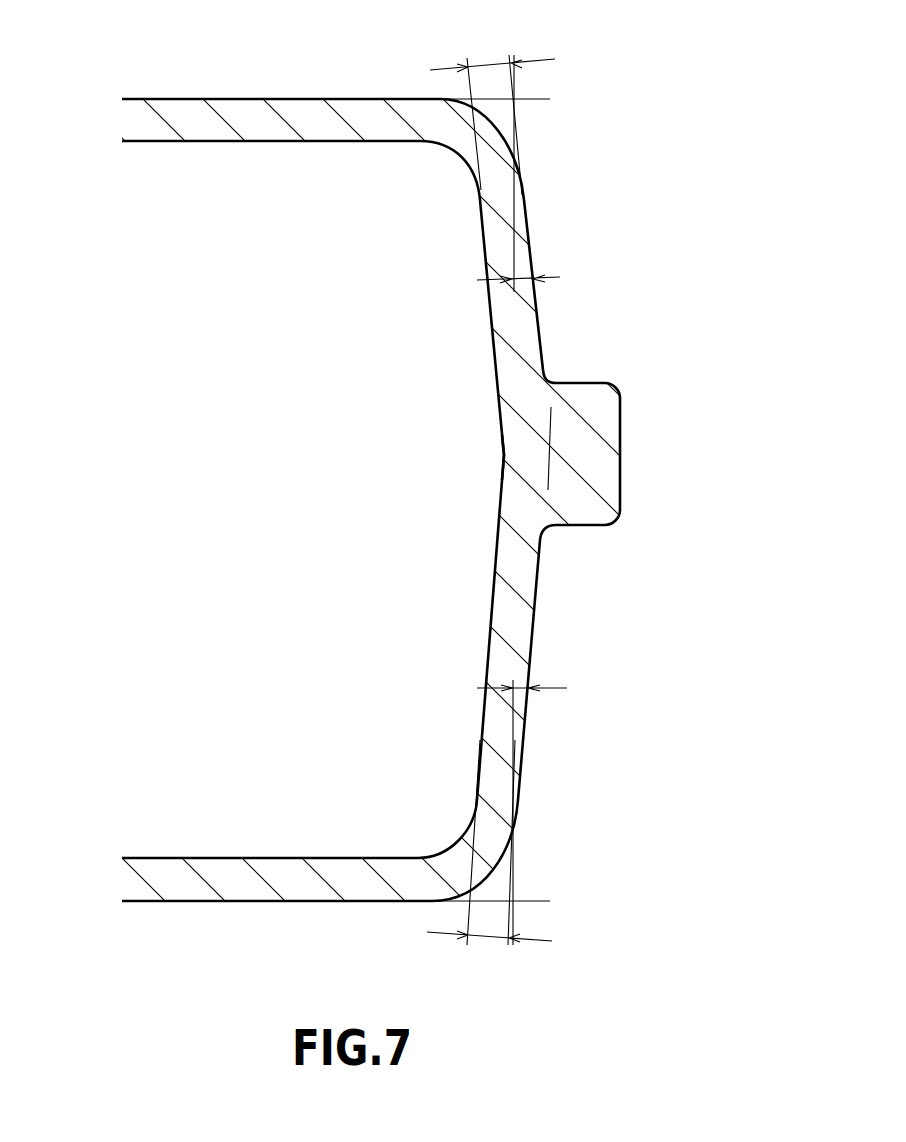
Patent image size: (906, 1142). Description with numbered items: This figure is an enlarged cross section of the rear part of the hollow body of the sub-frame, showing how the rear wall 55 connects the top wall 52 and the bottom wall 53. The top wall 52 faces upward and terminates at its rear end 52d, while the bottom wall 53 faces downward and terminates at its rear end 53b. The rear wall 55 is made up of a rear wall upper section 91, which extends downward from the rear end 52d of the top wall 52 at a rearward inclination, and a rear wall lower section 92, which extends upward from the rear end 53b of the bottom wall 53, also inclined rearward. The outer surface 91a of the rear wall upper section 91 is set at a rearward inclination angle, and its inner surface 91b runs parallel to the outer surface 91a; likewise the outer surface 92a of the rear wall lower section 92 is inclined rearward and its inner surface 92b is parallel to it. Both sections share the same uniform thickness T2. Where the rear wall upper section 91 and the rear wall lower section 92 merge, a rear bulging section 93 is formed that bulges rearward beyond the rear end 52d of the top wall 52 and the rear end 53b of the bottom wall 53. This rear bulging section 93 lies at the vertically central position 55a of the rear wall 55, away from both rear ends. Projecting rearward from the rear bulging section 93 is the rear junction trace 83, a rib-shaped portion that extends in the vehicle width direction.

The top wall 52 is at (258, 99).
The rear end of top wall 52d is at (413, 107).
The bottom wall 53 is at (258, 886).
The rear end of bottom wall 53b is at (412, 890).
The rear wall 55 is at (553, 500).
The vertically central position of rear wall 55a is at (525, 455).
The rear wall upper section 91 is at (495, 327).
The outer surface of rear wall upper section 91a is at (526, 211).
The inner surface of rear wall upper section 91b is at (485, 238).
The rear wall lower section 92 is at (490, 627).
The outer surface of rear wall lower section 92a is at (527, 752).
The inner surface of rear wall lower section 92b is at (492, 616).
The rear junction trace 83 is at (602, 474).
The rear bulging section 93 is at (540, 430).
The thickness T2 is at (495, 70).